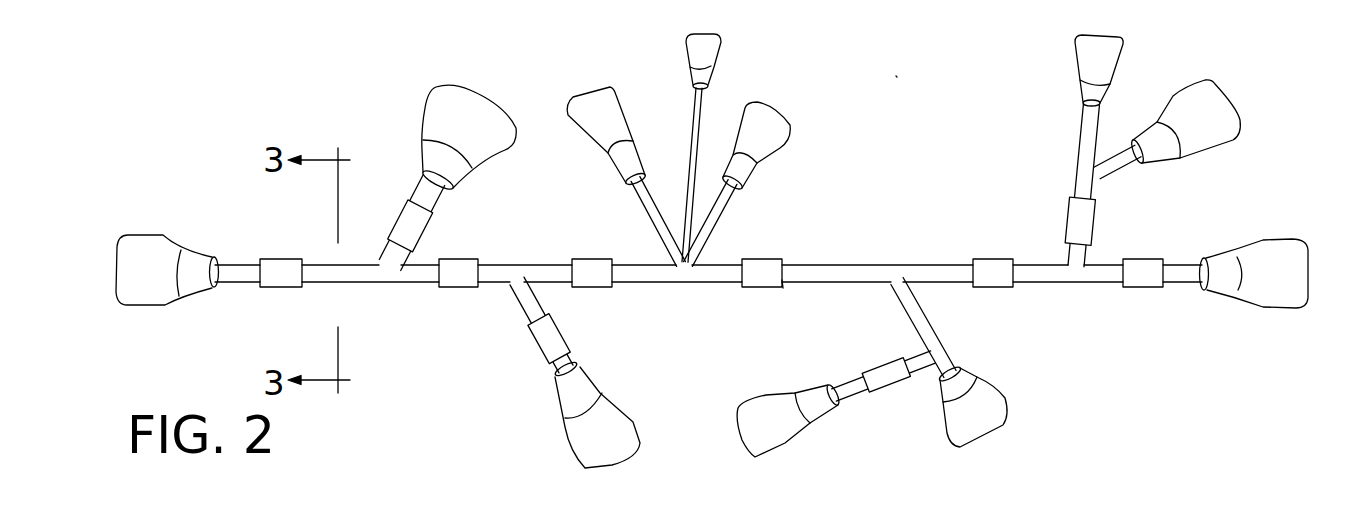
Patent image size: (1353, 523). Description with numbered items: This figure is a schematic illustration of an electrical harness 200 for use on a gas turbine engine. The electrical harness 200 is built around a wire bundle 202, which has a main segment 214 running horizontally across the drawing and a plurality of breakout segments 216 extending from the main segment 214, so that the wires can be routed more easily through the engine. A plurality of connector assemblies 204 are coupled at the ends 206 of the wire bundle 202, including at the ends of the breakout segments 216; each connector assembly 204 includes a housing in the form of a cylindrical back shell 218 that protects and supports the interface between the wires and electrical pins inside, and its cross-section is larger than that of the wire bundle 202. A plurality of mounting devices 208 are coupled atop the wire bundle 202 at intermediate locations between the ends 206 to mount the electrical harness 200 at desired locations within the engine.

The electrical harness 200 is at (896, 76).
The wire bundle 202 is at (873, 263).
The connector assembly 204 is at (140, 235).
The end 206 is at (212, 242).
The mounting device 208 is at (605, 259).
The main segment 214 is at (783, 288).
The breakout segment 216 is at (404, 144).
The cylindrical back shell 218 is at (188, 278).